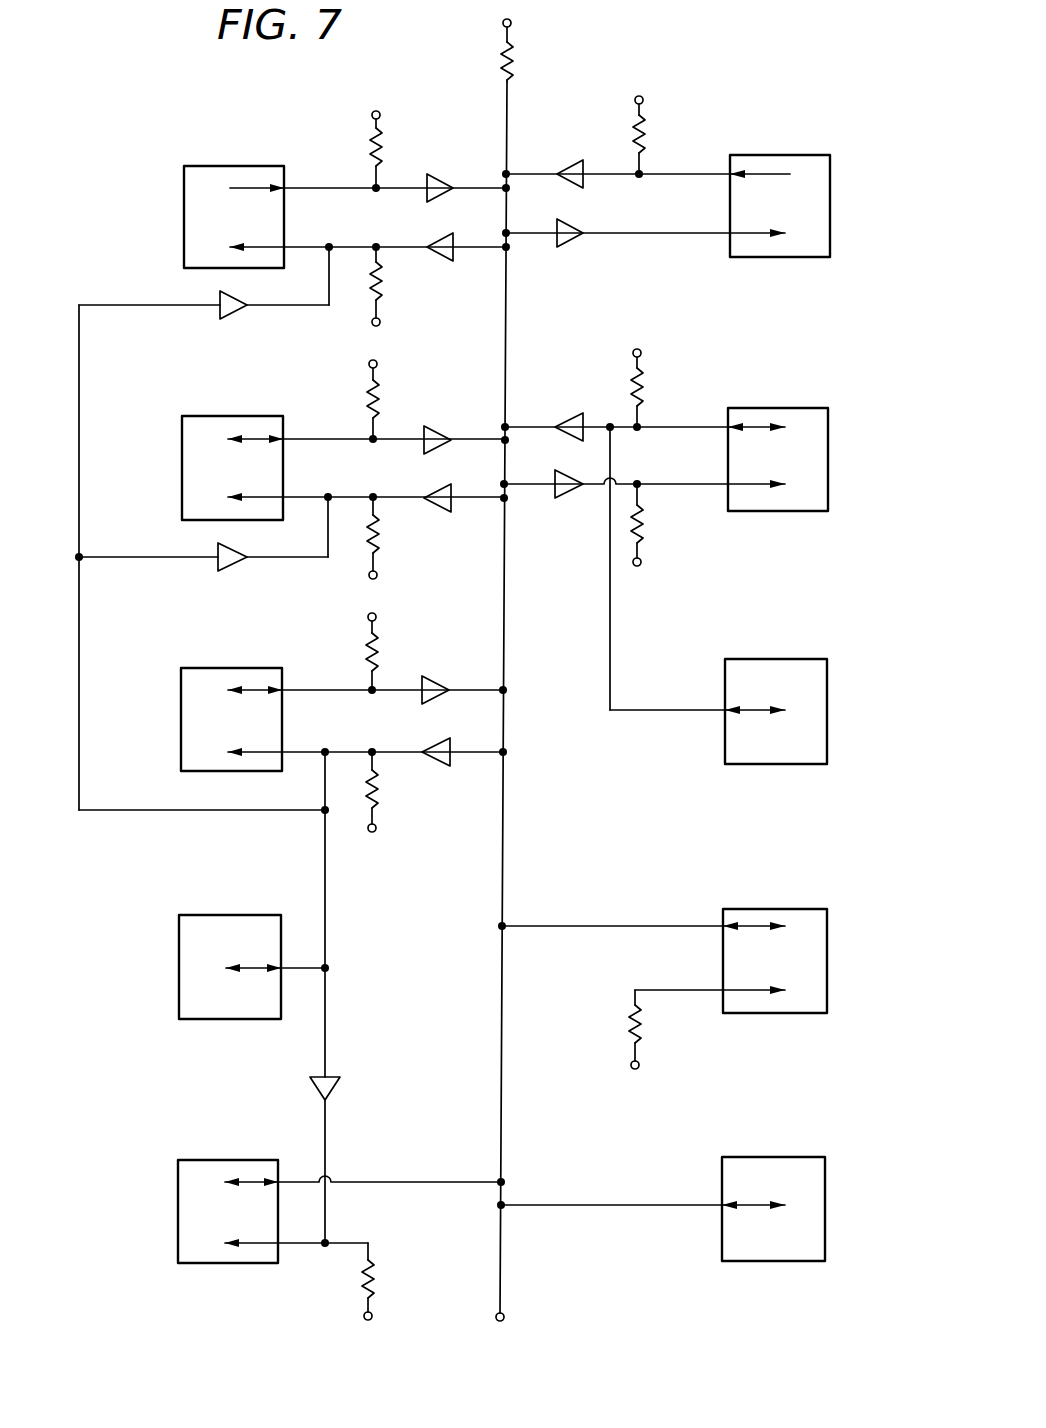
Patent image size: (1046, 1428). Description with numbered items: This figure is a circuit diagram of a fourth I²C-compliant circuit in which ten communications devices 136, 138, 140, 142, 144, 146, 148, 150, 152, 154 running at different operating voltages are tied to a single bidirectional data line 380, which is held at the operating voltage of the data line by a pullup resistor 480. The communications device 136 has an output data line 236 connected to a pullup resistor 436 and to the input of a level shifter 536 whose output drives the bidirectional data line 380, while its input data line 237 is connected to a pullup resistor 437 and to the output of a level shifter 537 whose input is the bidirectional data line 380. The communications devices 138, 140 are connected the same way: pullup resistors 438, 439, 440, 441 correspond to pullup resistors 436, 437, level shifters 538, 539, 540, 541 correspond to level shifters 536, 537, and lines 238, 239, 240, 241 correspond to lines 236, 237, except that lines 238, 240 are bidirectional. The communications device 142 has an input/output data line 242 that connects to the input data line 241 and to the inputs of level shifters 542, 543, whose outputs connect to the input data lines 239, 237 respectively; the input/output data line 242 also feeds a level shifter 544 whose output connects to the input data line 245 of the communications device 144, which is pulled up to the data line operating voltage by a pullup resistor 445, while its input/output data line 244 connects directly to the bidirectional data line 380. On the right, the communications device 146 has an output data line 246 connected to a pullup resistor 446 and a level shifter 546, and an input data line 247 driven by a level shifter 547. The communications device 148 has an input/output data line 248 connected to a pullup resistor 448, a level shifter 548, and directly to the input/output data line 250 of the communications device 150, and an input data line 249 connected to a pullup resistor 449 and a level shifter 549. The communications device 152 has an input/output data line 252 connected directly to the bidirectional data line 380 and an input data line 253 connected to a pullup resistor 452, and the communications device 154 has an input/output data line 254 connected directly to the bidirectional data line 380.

The communications device 136 is at (237, 166).
The communications device 138 is at (237, 416).
The communications device 140 is at (233, 668).
The communications device 142 is at (228, 915).
The communications device 144 is at (226, 1160).
The communications device 146 is at (785, 155).
The communications device 148 is at (783, 408).
The communications device 150 is at (780, 659).
The communications device 152 is at (776, 909).
The communications device 154 is at (772, 1157).
The output data line 236 is at (284, 188).
The input data line 237 is at (284, 247).
The bidirectional data line 238 is at (283, 439).
The input data line 239 is at (283, 497).
The bidirectional data line 240 is at (282, 690).
The input data line 241 is at (282, 752).
The input/output data line 242 is at (281, 968).
The input/output data line 244 is at (278, 1182).
The input data line 245 is at (280, 1244).
The output data line 246 is at (730, 174).
The input data line 247 is at (730, 233).
The input/output data line 248 is at (728, 427).
The input data line 249 is at (728, 484).
The input/output data line 250 is at (725, 710).
The input/output data line 252 is at (723, 926).
The input data line 253 is at (723, 990).
The input/output data line 254 is at (722, 1205).
The bidirectional data line 380 is at (509, 104).
The pullup resistor 436 is at (379, 148).
The pullup resistor 437 is at (379, 283).
The pullup resistor 438 is at (376, 400).
The pullup resistor 439 is at (376, 532).
The pullup resistor 440 is at (375, 653).
The pullup resistor 441 is at (375, 788).
The pullup resistor 445 is at (375, 1280).
The pullup resistor 446 is at (634, 136).
The pullup resistor 448 is at (634, 383).
The pullup resistor 449 is at (662, 531).
The pullup resistor 452 is at (643, 1025).
The pullup resistor 480 is at (512, 60).
The level shifter 536 is at (440, 174).
The level shifter 537 is at (448, 262).
The level shifter 538 is at (437, 426).
The level shifter 539 is at (447, 512).
The level shifter 540 is at (437, 676).
The level shifter 541 is at (447, 766).
The level shifter 542 is at (236, 551).
The level shifter 543 is at (240, 292).
The level shifter 544 is at (336, 1088).
The level shifter 546 is at (562, 166).
The level shifter 547 is at (558, 248).
The level shifter 548 is at (565, 415).
The level shifter 549 is at (557, 499).